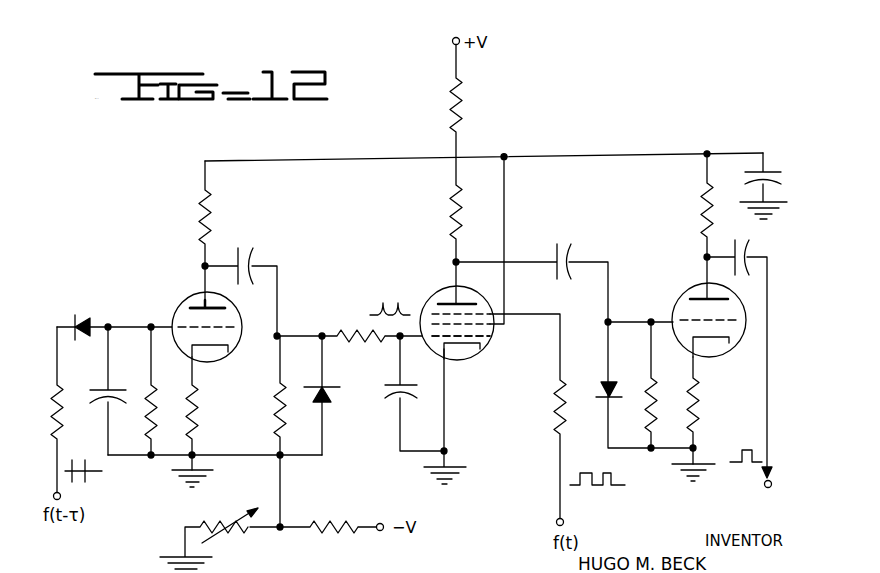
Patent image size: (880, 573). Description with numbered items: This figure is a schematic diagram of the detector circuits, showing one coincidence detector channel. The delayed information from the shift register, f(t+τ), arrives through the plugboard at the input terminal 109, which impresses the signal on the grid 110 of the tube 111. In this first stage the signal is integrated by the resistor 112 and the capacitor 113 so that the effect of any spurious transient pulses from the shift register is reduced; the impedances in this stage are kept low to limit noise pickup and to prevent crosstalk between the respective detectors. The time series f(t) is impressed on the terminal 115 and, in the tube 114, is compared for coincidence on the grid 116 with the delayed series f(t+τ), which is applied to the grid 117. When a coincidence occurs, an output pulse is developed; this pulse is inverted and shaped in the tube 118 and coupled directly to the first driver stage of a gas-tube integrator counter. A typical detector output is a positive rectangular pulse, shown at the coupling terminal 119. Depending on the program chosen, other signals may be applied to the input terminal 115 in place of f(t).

The input terminal 109 is at (53, 496).
The grid 110 is at (175, 327).
The tube 111 is at (241, 320).
The resistor 112 is at (56, 412).
The capacitor 113 is at (128, 397).
The tube 114 is at (430, 306).
The terminal 115 is at (556, 524).
The grid 116 is at (520, 314).
The grid 117 is at (481, 335).
The tube 118 is at (679, 311).
The coupling terminal 119 is at (772, 486).